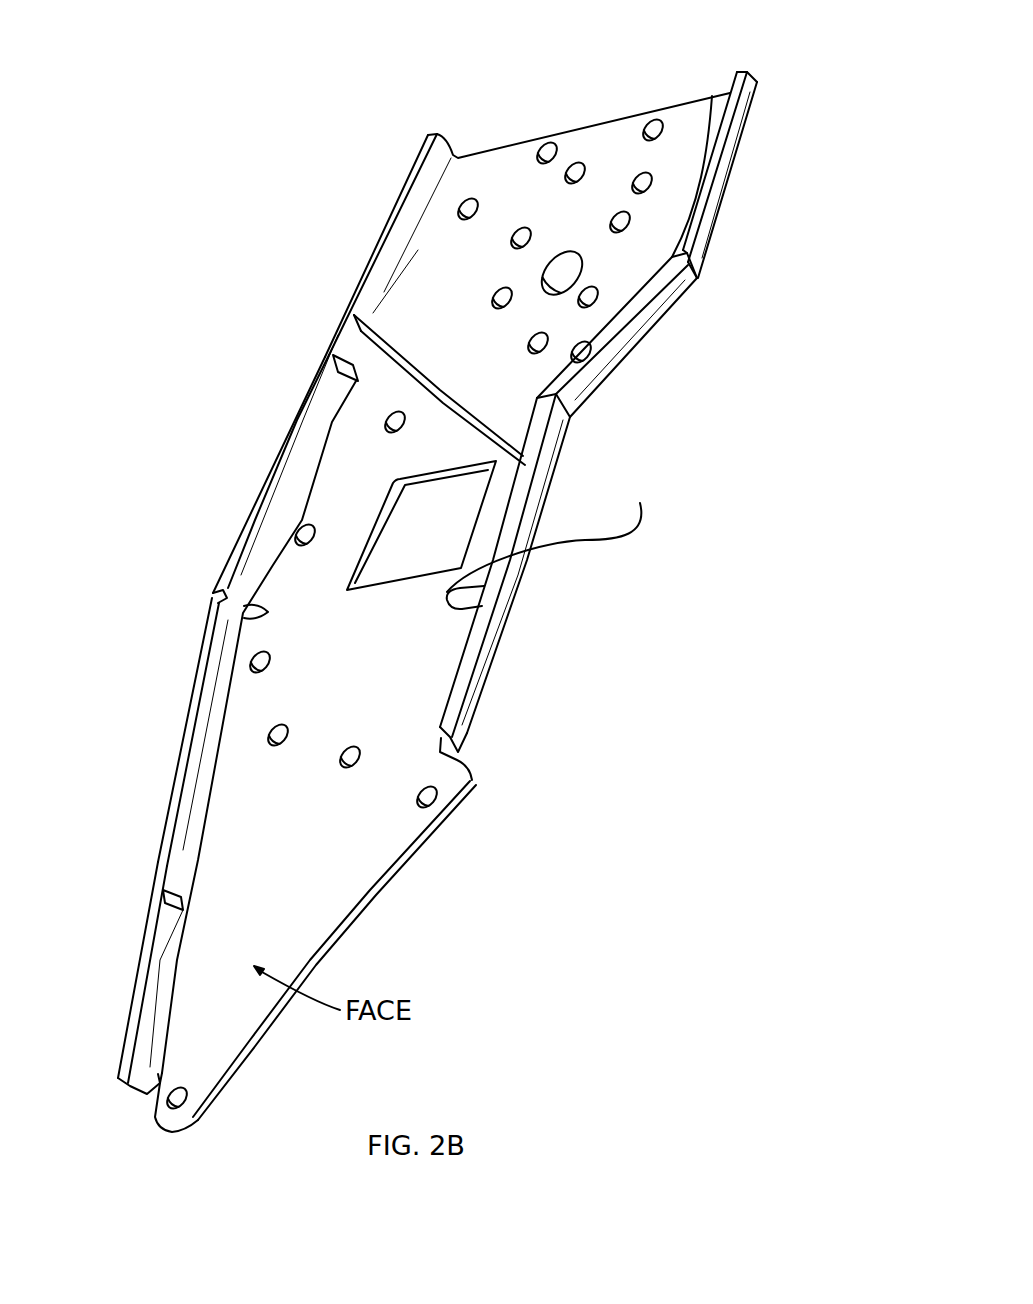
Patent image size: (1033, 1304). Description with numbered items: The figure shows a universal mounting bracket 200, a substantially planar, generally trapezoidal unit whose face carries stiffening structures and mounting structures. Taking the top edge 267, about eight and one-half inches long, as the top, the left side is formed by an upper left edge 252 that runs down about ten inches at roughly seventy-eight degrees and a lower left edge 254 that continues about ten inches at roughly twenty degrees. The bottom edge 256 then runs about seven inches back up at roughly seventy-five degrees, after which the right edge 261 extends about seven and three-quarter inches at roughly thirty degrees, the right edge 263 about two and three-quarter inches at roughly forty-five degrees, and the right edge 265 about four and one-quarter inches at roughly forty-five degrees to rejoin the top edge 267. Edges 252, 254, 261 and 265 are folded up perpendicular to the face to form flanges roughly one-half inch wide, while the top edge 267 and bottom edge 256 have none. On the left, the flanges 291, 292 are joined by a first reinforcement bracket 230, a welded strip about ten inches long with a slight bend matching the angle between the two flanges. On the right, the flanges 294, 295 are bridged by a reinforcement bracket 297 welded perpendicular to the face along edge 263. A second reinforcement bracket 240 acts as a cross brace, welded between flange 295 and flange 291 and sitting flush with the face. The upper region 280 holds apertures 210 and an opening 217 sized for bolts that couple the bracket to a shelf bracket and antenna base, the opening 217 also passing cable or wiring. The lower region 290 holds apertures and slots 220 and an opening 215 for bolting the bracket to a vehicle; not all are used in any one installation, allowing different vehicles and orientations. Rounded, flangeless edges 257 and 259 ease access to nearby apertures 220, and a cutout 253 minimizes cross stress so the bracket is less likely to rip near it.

The universal mounting bracket 200 is at (284, 85).
The apertures 210 is at (550, 341).
The opening 215 is at (398, 583).
The opening 217 is at (551, 300).
The apertures and slots 220 is at (384, 422).
The first reinforcement bracket 230 is at (265, 585).
The second reinforcement bracket 240 is at (408, 360).
The left edge 252 is at (388, 175).
The cutout 253 is at (204, 598).
The left edge 254 is at (143, 893).
The bottom edge 256 is at (366, 907).
The edge 257 is at (140, 1108).
The edge 259 is at (480, 758).
The right edge 261 is at (522, 607).
The right edge 263 is at (706, 300).
The right edge 265 is at (748, 166).
The top edge 267 is at (717, 74).
The region 280 is at (770, 92).
The region 290 is at (633, 557).
The flange 291 is at (378, 245).
The flange 292 is at (134, 1012).
The flange 294 is at (712, 238).
The flange 295 is at (495, 657).
The reinforcement bracket 297 is at (643, 345).